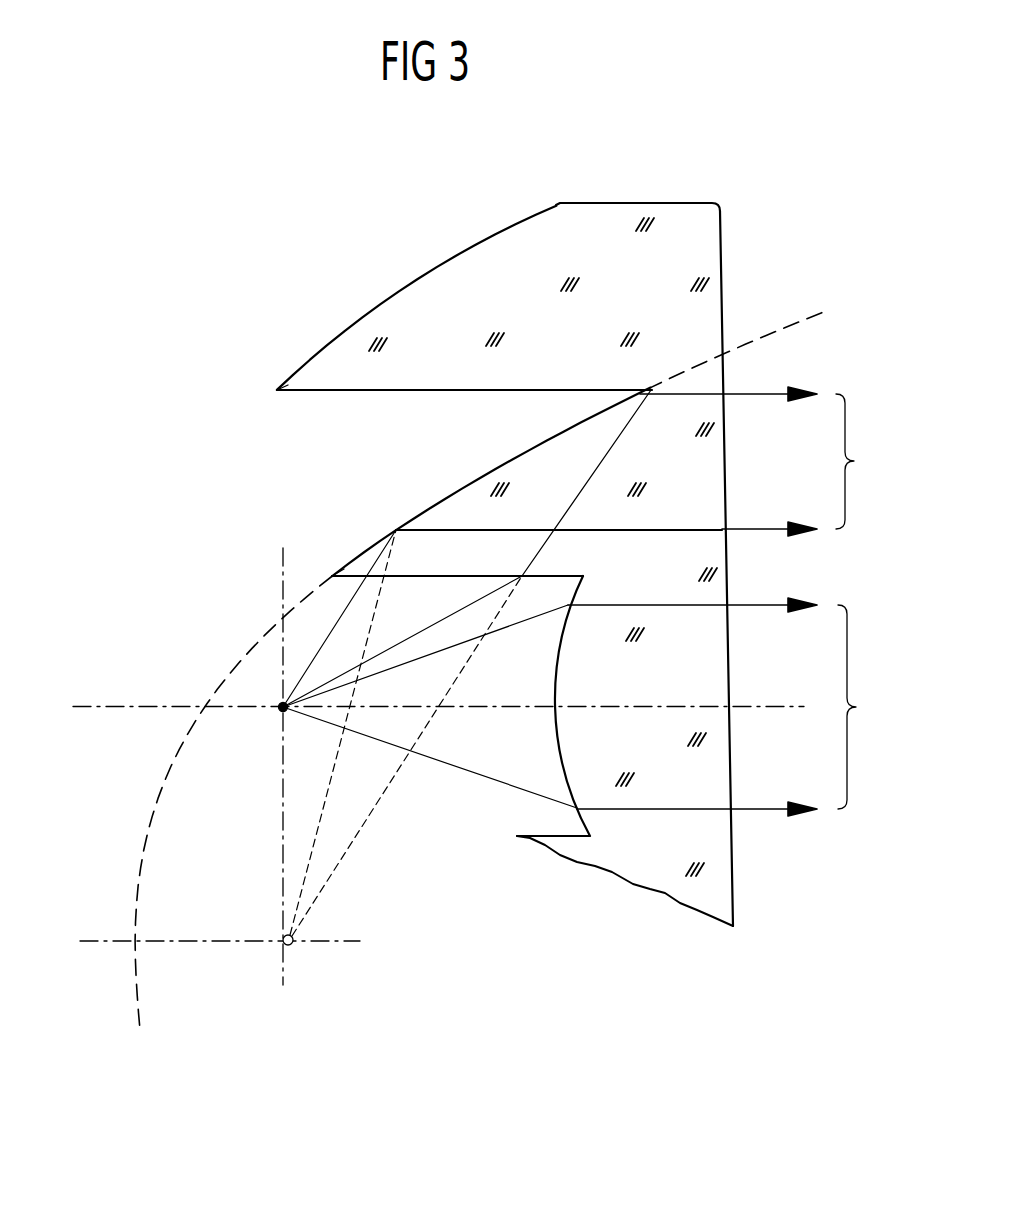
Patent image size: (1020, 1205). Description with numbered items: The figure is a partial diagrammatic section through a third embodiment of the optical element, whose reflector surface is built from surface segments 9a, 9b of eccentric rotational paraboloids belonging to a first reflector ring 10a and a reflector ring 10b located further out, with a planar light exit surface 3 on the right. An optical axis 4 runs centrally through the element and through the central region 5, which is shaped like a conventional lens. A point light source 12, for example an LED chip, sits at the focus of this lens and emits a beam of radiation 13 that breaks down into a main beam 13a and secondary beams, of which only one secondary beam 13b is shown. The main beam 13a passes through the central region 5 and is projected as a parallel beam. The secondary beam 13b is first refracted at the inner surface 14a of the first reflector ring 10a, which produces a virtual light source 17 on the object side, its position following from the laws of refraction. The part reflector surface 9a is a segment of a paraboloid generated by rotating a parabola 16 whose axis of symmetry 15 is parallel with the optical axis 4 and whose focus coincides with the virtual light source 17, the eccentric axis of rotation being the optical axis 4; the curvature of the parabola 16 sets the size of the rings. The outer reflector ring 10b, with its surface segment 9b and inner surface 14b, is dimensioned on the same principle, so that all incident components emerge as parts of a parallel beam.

The light exit surface 3 is at (722, 290).
The optical axis 4 is at (88, 706).
The central region 5 is at (553, 735).
The part reflector surface 9a is at (530, 451).
The surface segment 9b is at (545, 208).
The first reflector ring 10a is at (448, 542).
The reflector ring 10b is at (356, 345).
The point light source 12 is at (282, 707).
The beam of radiation 13 is at (323, 712).
The main beam 13a is at (736, 707).
The secondary beam 13b is at (772, 461).
The inner surface 14a is at (360, 572).
The inner surface 14b is at (298, 391).
The axis of symmetry 15 is at (95, 940).
The parabola 16 is at (133, 990).
The virtual light source 17 is at (292, 948).